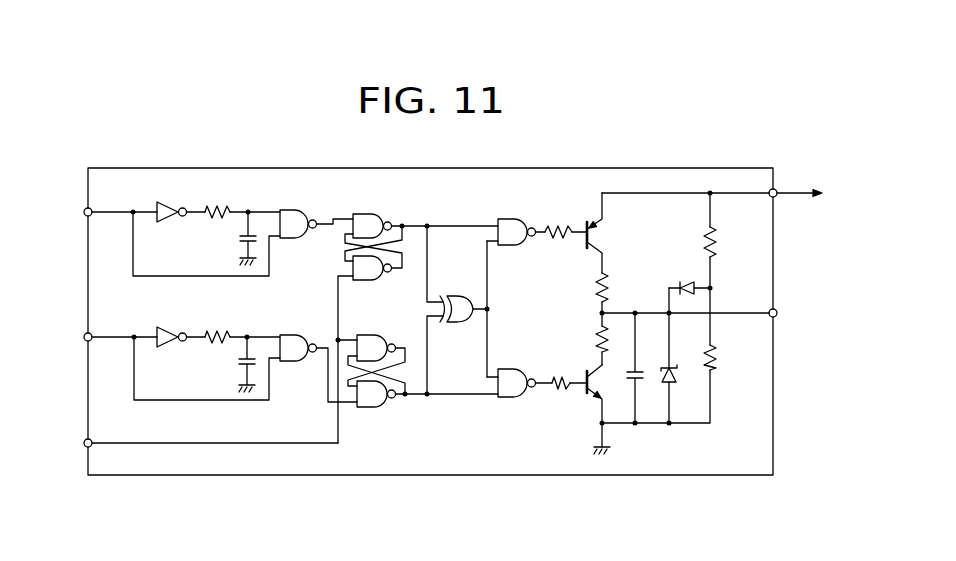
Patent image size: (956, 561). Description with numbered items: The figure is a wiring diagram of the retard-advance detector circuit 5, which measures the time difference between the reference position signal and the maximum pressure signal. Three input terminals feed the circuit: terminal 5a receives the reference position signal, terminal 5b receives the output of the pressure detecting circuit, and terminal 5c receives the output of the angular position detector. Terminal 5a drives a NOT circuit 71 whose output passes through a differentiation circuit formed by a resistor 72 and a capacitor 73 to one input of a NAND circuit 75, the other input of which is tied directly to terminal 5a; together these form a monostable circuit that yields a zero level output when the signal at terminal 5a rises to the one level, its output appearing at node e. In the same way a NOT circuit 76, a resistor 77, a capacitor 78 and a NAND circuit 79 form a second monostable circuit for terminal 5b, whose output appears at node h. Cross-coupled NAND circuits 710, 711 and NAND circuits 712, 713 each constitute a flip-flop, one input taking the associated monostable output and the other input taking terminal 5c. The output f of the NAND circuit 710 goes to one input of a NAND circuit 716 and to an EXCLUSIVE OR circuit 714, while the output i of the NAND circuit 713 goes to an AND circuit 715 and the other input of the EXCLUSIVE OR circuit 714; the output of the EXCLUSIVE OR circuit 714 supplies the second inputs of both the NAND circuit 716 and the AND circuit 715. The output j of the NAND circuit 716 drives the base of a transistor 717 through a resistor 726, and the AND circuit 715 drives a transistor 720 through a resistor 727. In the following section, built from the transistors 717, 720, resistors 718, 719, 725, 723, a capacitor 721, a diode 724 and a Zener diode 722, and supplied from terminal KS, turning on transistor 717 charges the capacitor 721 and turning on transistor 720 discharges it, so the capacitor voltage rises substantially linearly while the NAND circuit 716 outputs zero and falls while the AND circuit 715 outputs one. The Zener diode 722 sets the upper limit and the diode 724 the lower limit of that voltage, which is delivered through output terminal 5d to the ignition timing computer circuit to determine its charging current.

The retard-advance detector circuit 5 is at (397, 476).
The terminal 5a is at (85, 210).
The terminal 5b is at (85, 335).
The terminal 5c is at (85, 442).
The output terminal 5d is at (777, 313).
The supply terminal KS is at (732, 195).
The NOT circuit 71 is at (169, 210).
The resistor 72 is at (226, 210).
The capacitor 73 is at (238, 242).
The NAND circuit 75 is at (298, 210).
The NOT circuit 76 is at (175, 323).
The resistor 77 is at (230, 323).
The capacitor 78 is at (235, 367).
The NAND circuit 79 is at (298, 364).
The NAND circuit 710 is at (362, 213).
The NAND circuit 711 is at (352, 268).
The NAND circuit 712 is at (368, 329).
The NAND circuit 713 is at (367, 409).
The EXCLUSIVE OR circuit 714 is at (455, 323).
The AND circuit 715 is at (505, 400).
The NAND circuit 716 is at (505, 218).
The transistor 717 is at (596, 232).
The resistor 718 is at (597, 287).
The resistor 719 is at (597, 340).
The transistor 720 is at (588, 398).
The capacitor 721 is at (647, 384).
The Zener diode 722 is at (674, 382).
The resistor 723 is at (711, 357).
The diode 724 is at (690, 282).
The resistor 725 is at (714, 243).
The resistor 726 is at (556, 224).
The resistor 727 is at (550, 388).
The signal node e is at (341, 217).
The signal node f is at (428, 217).
The signal node h is at (327, 334).
The signal node i is at (427, 409).
The signal node j is at (542, 236).